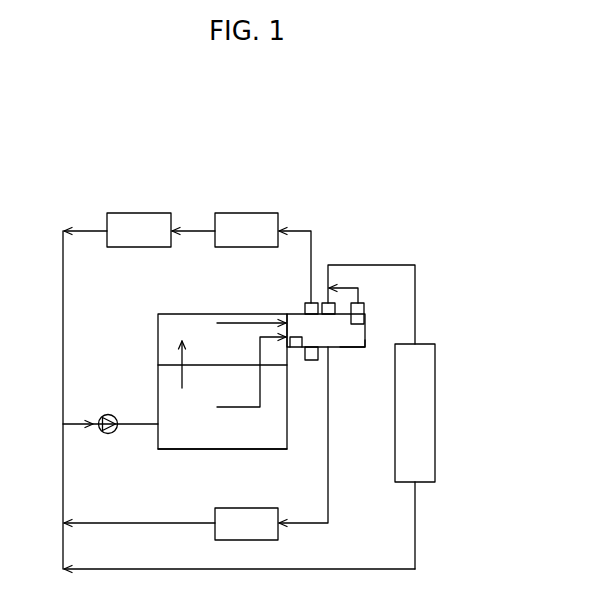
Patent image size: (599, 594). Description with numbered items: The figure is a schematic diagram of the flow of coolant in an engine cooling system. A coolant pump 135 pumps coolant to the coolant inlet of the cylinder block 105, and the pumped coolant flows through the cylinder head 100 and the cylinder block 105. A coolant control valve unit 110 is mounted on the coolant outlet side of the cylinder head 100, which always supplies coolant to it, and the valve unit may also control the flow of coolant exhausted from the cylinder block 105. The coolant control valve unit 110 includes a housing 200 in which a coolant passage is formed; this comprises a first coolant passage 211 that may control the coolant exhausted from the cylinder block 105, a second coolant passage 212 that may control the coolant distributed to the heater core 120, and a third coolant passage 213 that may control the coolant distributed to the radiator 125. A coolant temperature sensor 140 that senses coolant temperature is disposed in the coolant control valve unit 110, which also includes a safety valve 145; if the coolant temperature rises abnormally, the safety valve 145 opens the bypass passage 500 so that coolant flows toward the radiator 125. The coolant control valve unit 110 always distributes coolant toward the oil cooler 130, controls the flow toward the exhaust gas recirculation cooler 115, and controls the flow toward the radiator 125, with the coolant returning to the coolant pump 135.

The cylinder head 100 is at (158, 321).
The cylinder block 105 is at (183, 449).
The coolant control valve unit 110 is at (366, 351).
The exhaust gas recirculation (EGR) cooler 115 is at (246, 213).
The heater core 120 is at (138, 213).
The radiator 125 is at (435, 412).
The oil cooler 130 is at (246, 508).
The coolant pump 135 is at (108, 414).
The coolant temperature sensor 140 is at (310, 360).
The safety valve 145 is at (365, 324).
The housing 200 is at (347, 348).
The first coolant passage 211 is at (293, 337).
The second coolant passage 212 is at (307, 303).
The third coolant passage 213 is at (325, 303).
The bypass passage 500 is at (365, 307).